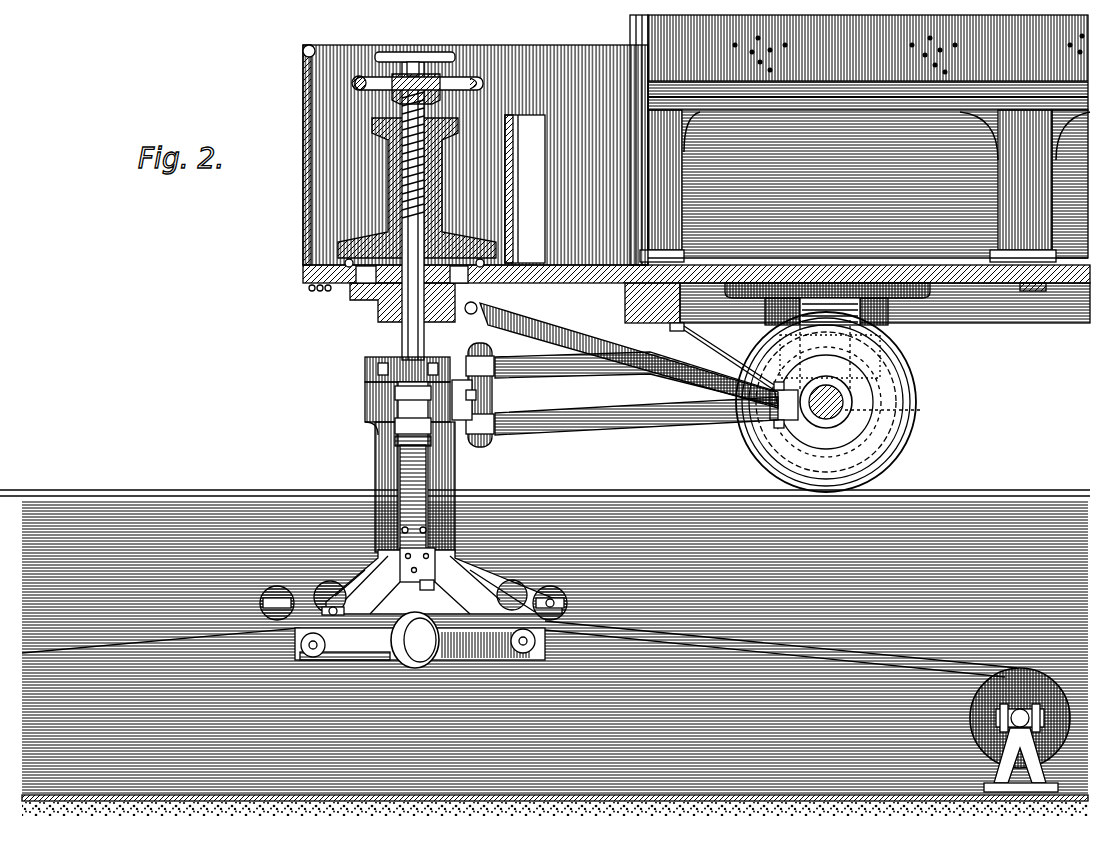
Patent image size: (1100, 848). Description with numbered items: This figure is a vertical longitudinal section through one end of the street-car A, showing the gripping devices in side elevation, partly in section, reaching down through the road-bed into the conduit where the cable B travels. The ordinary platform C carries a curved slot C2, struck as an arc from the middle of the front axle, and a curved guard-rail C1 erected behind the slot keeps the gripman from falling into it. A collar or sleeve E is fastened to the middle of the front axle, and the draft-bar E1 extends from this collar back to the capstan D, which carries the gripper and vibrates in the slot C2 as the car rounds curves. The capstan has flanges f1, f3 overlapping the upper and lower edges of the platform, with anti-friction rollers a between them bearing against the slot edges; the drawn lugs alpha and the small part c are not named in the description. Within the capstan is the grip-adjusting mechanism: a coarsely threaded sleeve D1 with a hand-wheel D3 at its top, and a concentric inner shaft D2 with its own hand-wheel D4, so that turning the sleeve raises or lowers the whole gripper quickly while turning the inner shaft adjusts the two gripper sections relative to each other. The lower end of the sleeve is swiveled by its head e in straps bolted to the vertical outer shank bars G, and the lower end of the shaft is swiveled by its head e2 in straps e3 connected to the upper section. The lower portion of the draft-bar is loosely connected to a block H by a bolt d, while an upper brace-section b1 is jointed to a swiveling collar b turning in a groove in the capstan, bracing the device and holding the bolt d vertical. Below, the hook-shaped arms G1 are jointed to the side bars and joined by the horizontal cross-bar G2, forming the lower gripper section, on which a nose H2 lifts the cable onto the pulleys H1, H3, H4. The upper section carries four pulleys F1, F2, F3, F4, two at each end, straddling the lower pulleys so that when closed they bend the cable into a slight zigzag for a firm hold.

The street-car A is at (860, 140).
The cable B is at (820, 658).
The platform C is at (696, 284).
The curved guard-rail C1 is at (525, 189).
The curved slot C2 is at (485, 296).
The capstan D is at (432, 188).
The sleeve D1 is at (442, 96).
The inner shaft D2 is at (398, 98).
The hand-wheel D3 is at (372, 90).
The hand-wheel D4 is at (430, 54).
The collar or sleeve E is at (828, 402).
The draft-bar E1 is at (636, 402).
The swiveling collar b is at (380, 306).
The upper brace-section b1 is at (621, 355).
The anti-friction rollers a is at (476, 394).
The lugs alpha is at (417, 220).
The upper flange f1 is at (345, 276).
The lower flange f3 is at (352, 295).
The cap block c is at (365, 368).
The bolt d is at (480, 386).
The head e is at (413, 402).
The head e2 is at (396, 392).
The straps e3 is at (396, 438).
The block H is at (470, 402).
The outer shank bars G is at (376, 476).
The hook-shaped arms G1 is at (444, 597).
The horizontal cross-bar G2 is at (480, 660).
The pulley F1 is at (272, 595).
The pulley F2 is at (336, 582).
The pulley F3 is at (508, 582).
The pulley F4 is at (560, 592).
The cable-supporting pulley H1 is at (435, 664).
The nose H2 is at (395, 662).
The pulley H3 is at (315, 660).
The pulley H4 is at (530, 656).